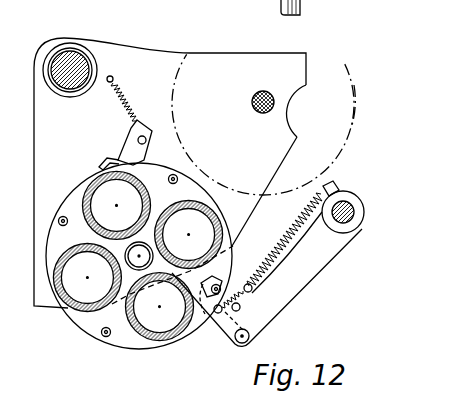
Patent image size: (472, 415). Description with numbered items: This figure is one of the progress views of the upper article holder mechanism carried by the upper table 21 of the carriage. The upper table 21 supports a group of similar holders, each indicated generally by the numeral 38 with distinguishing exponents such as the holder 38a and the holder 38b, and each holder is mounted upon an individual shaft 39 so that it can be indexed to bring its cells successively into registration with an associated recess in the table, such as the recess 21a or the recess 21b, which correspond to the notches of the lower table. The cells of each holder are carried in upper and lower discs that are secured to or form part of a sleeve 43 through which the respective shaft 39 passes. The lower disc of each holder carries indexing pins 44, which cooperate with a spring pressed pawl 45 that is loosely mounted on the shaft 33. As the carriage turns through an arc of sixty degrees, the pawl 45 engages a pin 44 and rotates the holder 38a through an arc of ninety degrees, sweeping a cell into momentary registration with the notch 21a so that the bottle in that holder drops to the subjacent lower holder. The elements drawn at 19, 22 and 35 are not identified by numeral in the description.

The upper table 21 is at (42, 190).
The recess of the upper table 21a is at (112, 304).
The recess of the upper table 21b is at (295, 98).
The bearing sleeve 19 is at (90, 66).
The shaft 22 is at (76, 79).
The upper holder 38 is at (125, 123).
The upper holder 38a is at (171, 165).
The upper holder 38b is at (355, 110).
The sleeve 43 is at (252, 99).
The shaft 39 is at (262, 114).
The shaft 33 is at (350, 198).
The spring pressed pawl 45 is at (285, 298).
The indexing pin 44 is at (110, 336).
The roller 35 is at (309, 7).